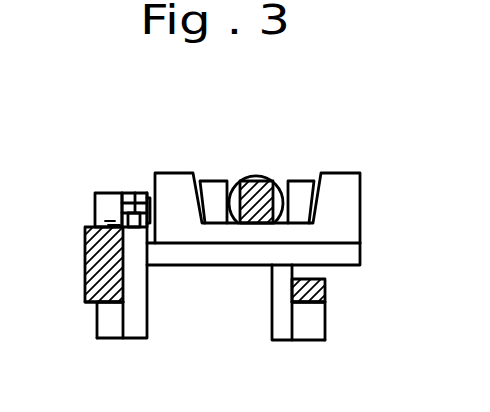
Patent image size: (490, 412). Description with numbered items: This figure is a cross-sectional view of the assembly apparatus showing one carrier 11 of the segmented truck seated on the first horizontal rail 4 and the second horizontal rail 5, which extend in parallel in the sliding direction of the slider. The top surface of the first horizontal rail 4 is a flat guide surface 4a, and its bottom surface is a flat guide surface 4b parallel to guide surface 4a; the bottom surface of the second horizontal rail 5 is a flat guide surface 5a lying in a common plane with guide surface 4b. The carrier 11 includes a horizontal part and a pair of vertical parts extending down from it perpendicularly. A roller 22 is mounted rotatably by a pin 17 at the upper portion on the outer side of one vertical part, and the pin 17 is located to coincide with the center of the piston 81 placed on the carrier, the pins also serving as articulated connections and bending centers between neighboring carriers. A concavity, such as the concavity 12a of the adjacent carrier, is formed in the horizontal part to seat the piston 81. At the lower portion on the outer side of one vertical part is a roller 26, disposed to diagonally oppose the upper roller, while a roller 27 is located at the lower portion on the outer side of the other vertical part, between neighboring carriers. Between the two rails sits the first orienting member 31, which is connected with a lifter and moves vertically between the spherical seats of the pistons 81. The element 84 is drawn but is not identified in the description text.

The first horizontal rail 4 is at (102, 266).
The guide surface 4a is at (95, 227).
The guide surface 4b is at (93, 304).
The second horizontal rail 5 is at (325, 291).
The guide surface 5a is at (325, 313).
The carrier 11 is at (355, 254).
The concavity 12a is at (355, 245).
The pin 17 is at (133, 193).
The roller 22 is at (108, 205).
The roller 26 is at (114, 331).
The roller 27 is at (314, 330).
The first orienting member 31 is at (252, 180).
The piston 81 is at (352, 214).
The retaining member 84 is at (236, 180).